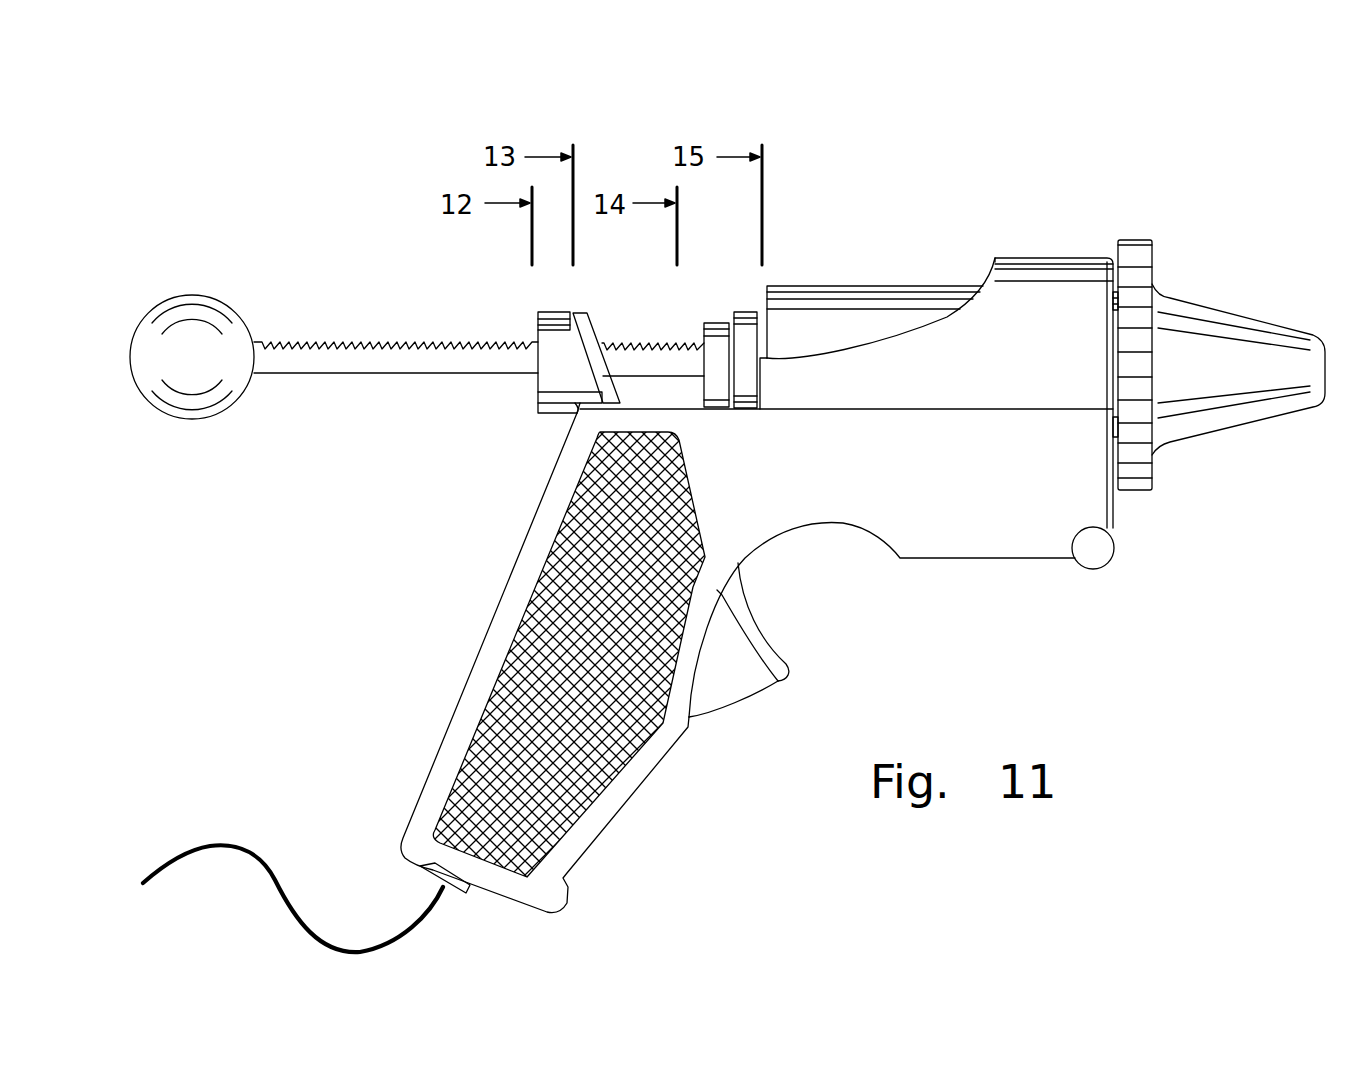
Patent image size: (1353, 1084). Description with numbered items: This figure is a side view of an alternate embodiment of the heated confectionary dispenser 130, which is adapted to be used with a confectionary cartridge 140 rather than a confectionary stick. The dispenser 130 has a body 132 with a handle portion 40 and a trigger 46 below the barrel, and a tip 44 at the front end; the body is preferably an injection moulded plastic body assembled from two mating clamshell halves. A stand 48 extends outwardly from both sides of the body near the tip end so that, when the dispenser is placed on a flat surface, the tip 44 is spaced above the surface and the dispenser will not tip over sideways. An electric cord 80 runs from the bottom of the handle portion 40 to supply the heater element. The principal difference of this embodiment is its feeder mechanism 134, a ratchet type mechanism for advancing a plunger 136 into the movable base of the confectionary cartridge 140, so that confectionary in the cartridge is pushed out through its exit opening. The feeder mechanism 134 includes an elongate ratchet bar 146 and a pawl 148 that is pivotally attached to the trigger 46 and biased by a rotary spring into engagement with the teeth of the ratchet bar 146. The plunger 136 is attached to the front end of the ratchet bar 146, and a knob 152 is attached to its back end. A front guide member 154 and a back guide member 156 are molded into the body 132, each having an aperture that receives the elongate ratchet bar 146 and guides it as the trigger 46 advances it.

The knob 152 is at (197, 294).
The elongate ratchet bar 146 is at (360, 373).
The back guide member 156 is at (537, 390).
The pawl 148 is at (592, 325).
The feeder mechanism 134 is at (620, 316).
The front guide member 154 is at (718, 372).
The plunger 136 is at (743, 350).
The confectionary dispenser 130 is at (836, 191).
The confectionary cartridge 140 is at (792, 330).
The body 132 is at (1025, 300).
The tip 44 is at (1137, 238).
The handle portion 40 is at (487, 632).
The trigger 46 is at (762, 628).
The stand 48 is at (1088, 557).
The electric cord 80 is at (225, 841).